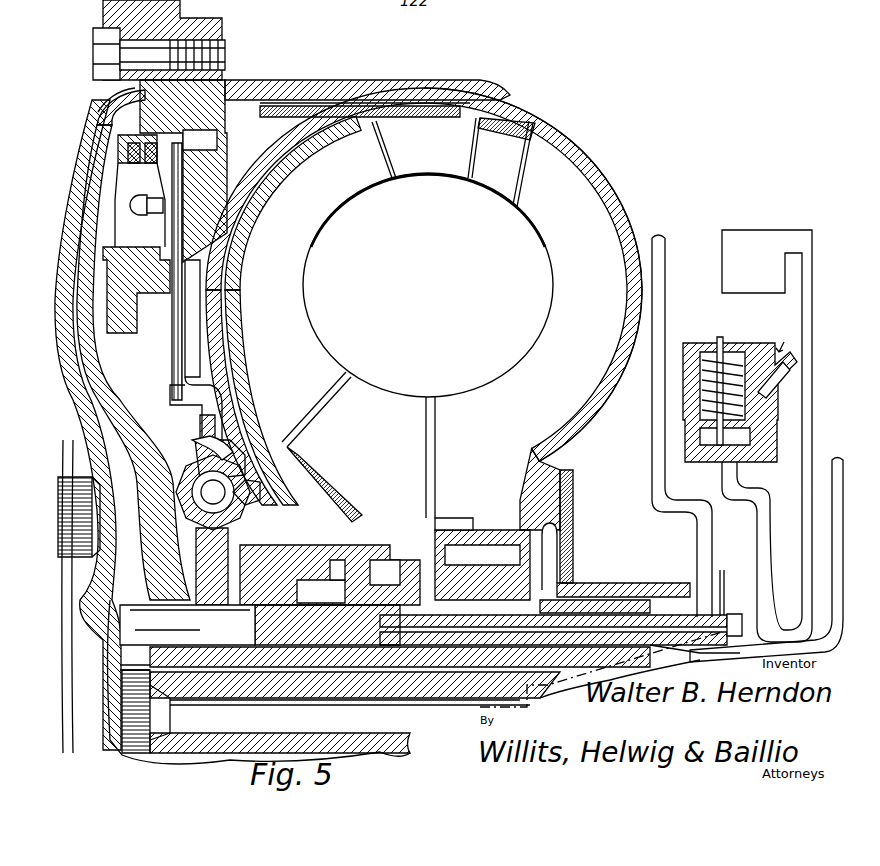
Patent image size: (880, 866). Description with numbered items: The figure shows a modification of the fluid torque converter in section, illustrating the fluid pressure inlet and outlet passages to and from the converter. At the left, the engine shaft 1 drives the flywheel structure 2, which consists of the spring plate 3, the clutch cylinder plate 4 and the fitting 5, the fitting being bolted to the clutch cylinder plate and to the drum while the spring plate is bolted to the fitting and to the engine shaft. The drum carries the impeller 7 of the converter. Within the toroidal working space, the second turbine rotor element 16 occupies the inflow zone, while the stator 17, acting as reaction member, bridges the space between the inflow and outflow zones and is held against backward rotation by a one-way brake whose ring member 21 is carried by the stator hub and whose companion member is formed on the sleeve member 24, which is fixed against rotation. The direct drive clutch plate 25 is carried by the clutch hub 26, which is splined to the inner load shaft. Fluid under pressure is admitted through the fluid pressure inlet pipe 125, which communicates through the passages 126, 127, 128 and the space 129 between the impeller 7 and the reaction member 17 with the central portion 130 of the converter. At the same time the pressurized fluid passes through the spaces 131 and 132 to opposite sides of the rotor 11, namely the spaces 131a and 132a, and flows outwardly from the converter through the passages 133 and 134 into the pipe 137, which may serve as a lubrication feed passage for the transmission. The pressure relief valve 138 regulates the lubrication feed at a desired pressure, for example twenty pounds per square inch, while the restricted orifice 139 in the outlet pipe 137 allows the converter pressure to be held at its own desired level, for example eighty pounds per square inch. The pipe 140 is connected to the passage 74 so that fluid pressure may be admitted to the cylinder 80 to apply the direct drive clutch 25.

The engine shaft 1 is at (76, 478).
The flywheel structure 2 is at (135, 105).
The spring plate 3 is at (74, 212).
The clutch cylinder plate 4 is at (112, 118).
The fitting 5 is at (236, 90).
The impeller 7 is at (497, 392).
The rotor 11 is at (270, 150).
The second turbine rotor element 16 is at (232, 318).
The stator 17 is at (384, 397).
The ring member 21 is at (505, 508).
The sleeve member 24 is at (722, 610).
The clutch plate 25 is at (178, 332).
The clutch hub 26 is at (205, 612).
The passage 74 is at (422, 713).
The cylinder 80 is at (98, 302).
The fluid pressure inlet pipe 125 is at (648, 462).
The passage 126 is at (575, 585).
The passage 127 is at (555, 548).
The passage 128 is at (455, 512).
The space 129 is at (436, 437).
The central portion 130 is at (517, 207).
The space 131 is at (480, 155).
The space 131a is at (238, 185).
The space 132 is at (382, 180).
The space 132a is at (233, 284).
The passage 133 is at (325, 482).
The passage 134 is at (345, 548).
The pipe 137 is at (725, 616).
The pressure relief valve 138 is at (760, 462).
The restricted orifice 139 is at (740, 622).
The pipe 140 is at (832, 458).